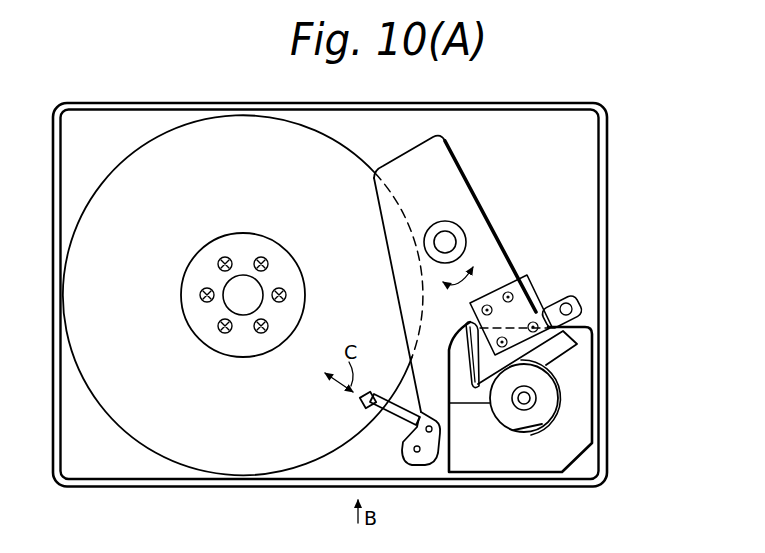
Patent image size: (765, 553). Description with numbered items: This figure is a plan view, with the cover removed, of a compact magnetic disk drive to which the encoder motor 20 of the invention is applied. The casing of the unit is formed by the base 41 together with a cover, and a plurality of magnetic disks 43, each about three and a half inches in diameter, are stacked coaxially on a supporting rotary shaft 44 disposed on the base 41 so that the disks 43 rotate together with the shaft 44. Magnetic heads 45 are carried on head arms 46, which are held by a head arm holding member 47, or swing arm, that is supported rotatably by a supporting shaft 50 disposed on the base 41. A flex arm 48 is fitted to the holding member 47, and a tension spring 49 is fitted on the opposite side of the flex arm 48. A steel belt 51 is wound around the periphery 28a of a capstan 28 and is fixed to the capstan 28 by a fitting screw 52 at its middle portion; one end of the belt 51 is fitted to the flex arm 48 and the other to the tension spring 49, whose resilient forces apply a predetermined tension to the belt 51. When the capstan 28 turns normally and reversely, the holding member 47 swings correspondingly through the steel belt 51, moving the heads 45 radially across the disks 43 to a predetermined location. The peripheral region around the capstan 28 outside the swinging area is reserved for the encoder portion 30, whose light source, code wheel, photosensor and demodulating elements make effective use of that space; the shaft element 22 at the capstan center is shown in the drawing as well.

The encoder motor 20 is at (590, 458).
The motor shaft 22 is at (548, 396).
The capstan 28 is at (565, 408).
The periphery of the capstan 28a is at (578, 425).
The encoder portion 30 is at (523, 463).
The base 41 is at (325, 472).
The magnetic disks 43 is at (168, 460).
The supporting rotary shaft 44 is at (238, 361).
The magnetic heads 45 is at (361, 404).
The head arms 46 is at (392, 425).
The head arm holding member 47 is at (502, 256).
The flex arm 48 is at (557, 310).
The tension spring 49 is at (449, 345).
The supporting shaft 50 is at (455, 232).
The steel belt 51 is at (552, 342).
The fitting screw 52 is at (542, 425).